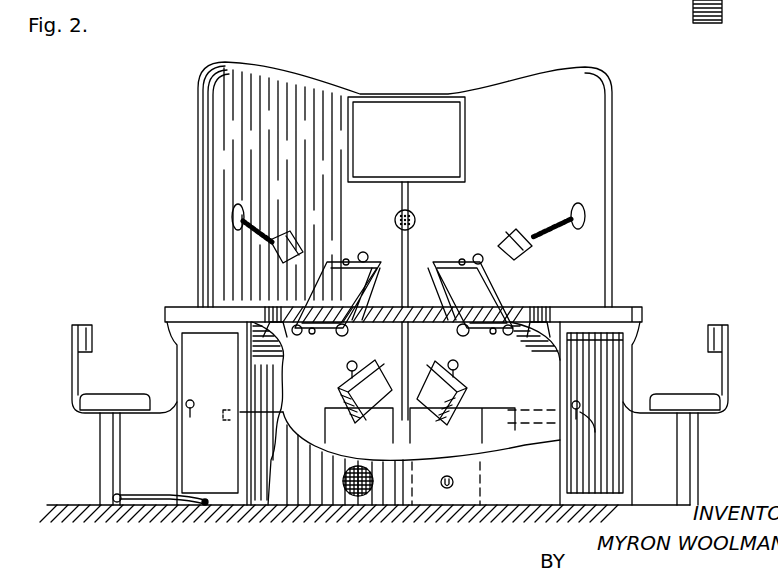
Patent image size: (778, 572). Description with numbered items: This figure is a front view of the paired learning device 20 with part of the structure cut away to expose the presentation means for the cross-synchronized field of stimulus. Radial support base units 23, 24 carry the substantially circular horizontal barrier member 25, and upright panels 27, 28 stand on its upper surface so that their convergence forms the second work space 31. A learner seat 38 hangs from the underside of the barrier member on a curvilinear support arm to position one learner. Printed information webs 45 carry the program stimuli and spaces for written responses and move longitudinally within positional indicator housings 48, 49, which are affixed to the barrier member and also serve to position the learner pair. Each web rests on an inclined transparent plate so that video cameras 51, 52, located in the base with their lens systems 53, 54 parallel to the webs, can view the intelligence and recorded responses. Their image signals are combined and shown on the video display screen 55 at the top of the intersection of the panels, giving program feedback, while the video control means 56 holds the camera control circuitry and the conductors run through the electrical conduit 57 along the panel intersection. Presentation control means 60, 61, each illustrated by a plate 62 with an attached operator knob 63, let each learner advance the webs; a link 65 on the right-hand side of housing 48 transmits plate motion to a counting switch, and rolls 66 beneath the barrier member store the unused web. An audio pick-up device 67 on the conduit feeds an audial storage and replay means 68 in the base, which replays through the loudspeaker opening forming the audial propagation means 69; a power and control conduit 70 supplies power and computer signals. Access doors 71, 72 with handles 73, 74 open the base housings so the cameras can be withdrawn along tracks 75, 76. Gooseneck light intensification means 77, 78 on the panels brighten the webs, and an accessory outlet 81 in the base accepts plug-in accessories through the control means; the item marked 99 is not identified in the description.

The paired learning device 20 is at (630, 75).
The radial support base unit 23 is at (282, 490).
The radial support base unit 24 is at (527, 484).
The horizontal barrier member 25 is at (642, 311).
The upright panel 27 is at (268, 121).
The upright panel 28 is at (580, 119).
The second work space 31 is at (556, 188).
The learner seat 38 is at (95, 427).
The printed information web 45 is at (322, 330).
The positional indicator housing 48 is at (314, 279).
The positional indicator housing 49 is at (507, 282).
The video camera 51 is at (340, 390).
The video camera 52 is at (466, 382).
The camera lens system 53 is at (347, 370).
The camera lens system 54 is at (459, 368).
The video display screen 55 is at (432, 144).
The video control means 56 is at (478, 445).
The electrical conduit 57 is at (410, 240).
The presentation control means 60 is at (334, 254).
The presentation control means 61 is at (459, 253).
The plate 62 is at (346, 259).
The operator knob 63 is at (364, 252).
The link 65 is at (368, 318).
The roll 66 is at (299, 336).
The audio pick-up device 67 is at (414, 216).
The audial storage and replay means 68 is at (337, 433).
The audial propagation means 69 is at (362, 496).
The power and control conduit 70 is at (152, 497).
The access door 71 is at (198, 358).
The access door 72 is at (605, 358).
The handle 73 is at (184, 418).
The handle 74 is at (591, 430).
The track 75 is at (267, 413).
The track 76 is at (501, 413).
The light intensification means 77 is at (254, 233).
The light intensification means 78 is at (550, 219).
The accessory outlet 81 is at (446, 489).
The indicator 99 is at (722, 5).